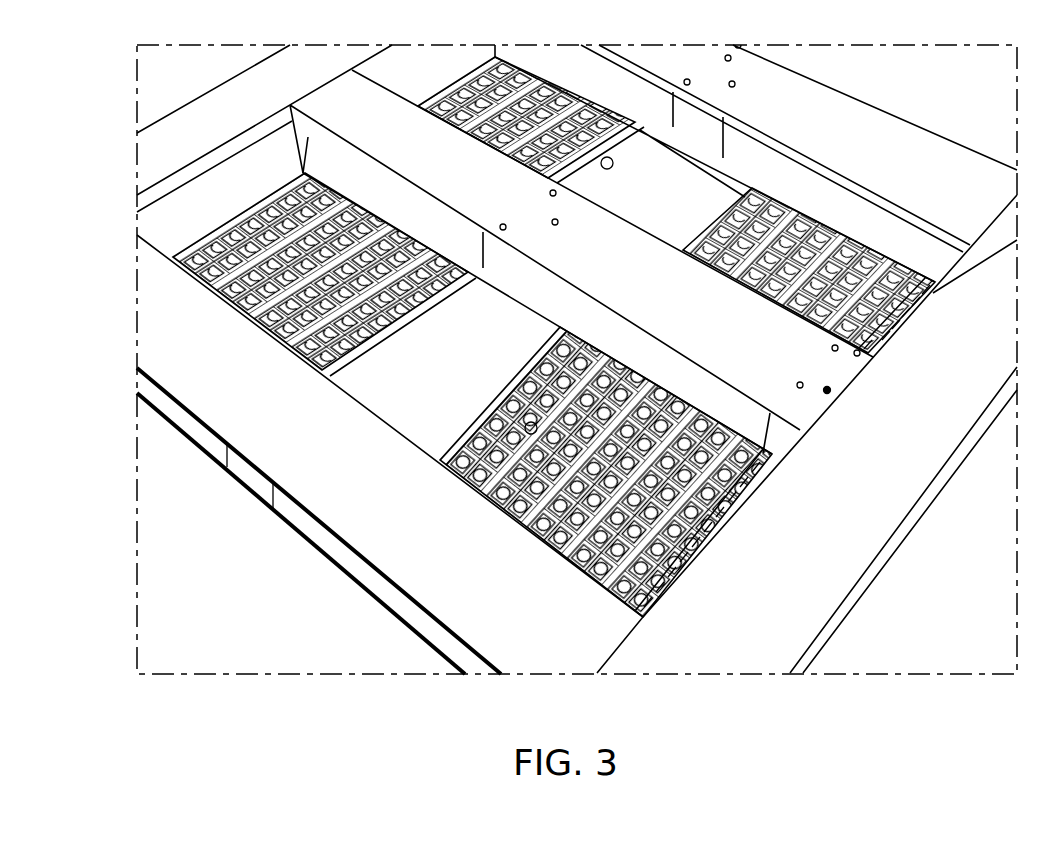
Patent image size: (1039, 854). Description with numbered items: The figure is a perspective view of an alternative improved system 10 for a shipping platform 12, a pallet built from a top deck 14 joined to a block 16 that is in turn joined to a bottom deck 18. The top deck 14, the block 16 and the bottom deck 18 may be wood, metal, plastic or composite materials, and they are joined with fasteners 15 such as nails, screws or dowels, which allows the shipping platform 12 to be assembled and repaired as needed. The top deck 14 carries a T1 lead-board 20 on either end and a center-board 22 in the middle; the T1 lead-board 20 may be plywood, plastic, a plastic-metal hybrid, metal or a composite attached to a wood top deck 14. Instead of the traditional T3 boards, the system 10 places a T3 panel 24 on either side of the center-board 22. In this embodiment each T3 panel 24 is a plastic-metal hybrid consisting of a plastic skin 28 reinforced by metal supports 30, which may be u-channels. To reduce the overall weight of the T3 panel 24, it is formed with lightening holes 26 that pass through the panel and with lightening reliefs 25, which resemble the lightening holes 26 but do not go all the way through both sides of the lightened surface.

The system 10 is at (432, 690).
The shipping platform 12 is at (377, 608).
The top deck 14 is at (327, 558).
The fasteners 15 is at (827, 390).
The block 16 is at (258, 483).
The bottom deck 18 is at (875, 540).
The T1 lead-board 20 is at (180, 228).
The center-board 22 is at (433, 395).
The T3 panel 24 is at (245, 322).
The lightening reliefs 25 is at (470, 445).
The lightening holes 26 is at (877, 340).
The plastic skin 28 is at (437, 305).
The metal supports 30 is at (607, 165).